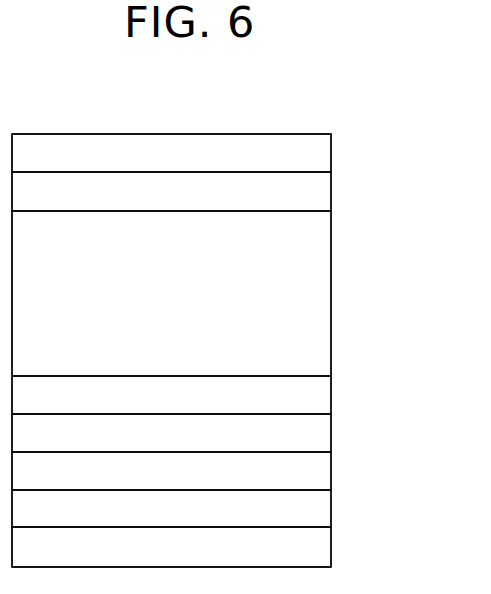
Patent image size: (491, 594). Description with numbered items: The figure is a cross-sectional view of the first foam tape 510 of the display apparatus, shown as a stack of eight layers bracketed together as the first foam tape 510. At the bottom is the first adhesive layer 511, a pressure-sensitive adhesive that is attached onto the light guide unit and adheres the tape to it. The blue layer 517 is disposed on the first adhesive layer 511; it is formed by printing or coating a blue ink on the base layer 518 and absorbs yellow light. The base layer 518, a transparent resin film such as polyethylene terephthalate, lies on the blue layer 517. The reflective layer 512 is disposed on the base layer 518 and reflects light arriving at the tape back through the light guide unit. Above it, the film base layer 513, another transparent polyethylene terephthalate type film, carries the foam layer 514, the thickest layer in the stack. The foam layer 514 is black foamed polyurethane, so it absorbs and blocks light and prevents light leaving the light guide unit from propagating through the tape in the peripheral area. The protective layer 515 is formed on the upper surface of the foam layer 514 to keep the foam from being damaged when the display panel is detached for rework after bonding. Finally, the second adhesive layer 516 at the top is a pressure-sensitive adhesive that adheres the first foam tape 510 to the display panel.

The first foam tape 510 is at (427, 133).
The first adhesive layer 511 is at (327, 550).
The reflective layer 512 is at (327, 437).
The film base layer 513 is at (327, 393).
The foam layer 514 is at (327, 287).
The protective layer 515 is at (327, 186).
The second adhesive layer 516 is at (327, 147).
The blue layer 517 is at (327, 508).
The base layer 518 is at (327, 475).